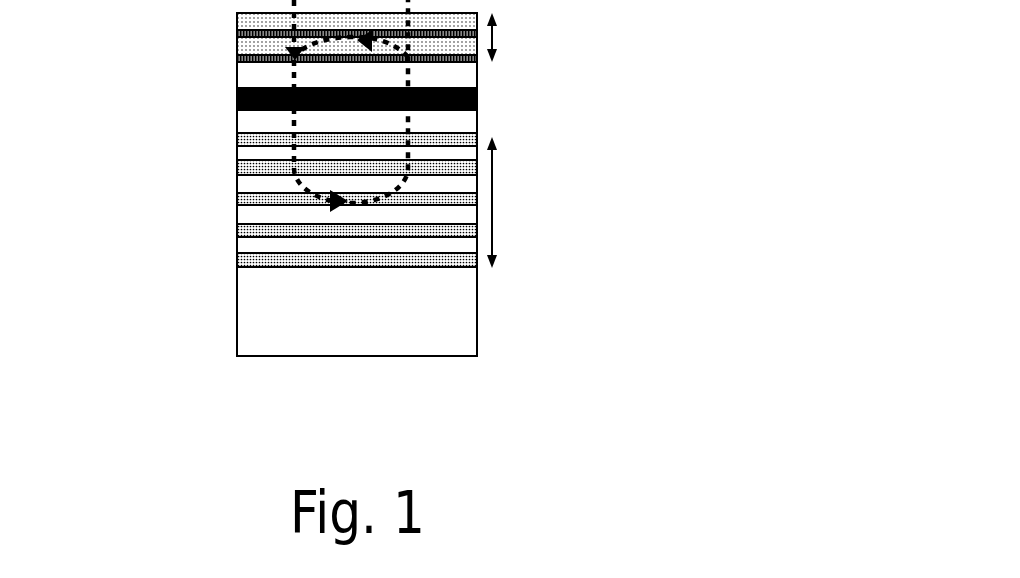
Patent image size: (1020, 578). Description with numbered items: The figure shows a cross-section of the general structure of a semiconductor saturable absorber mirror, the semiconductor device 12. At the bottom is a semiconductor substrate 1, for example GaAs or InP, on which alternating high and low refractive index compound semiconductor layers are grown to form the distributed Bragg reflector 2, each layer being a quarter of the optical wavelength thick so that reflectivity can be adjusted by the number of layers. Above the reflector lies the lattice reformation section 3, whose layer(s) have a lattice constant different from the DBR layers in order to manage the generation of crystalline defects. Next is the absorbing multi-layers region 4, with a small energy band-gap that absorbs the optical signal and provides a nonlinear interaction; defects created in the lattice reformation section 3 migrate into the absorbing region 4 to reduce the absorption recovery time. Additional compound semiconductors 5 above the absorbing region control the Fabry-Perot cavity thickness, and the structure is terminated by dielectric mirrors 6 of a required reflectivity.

The semiconductor substrate 1 is at (477, 312).
The distributed Bragg reflector 2 is at (430, 200).
The lattice reformation section 3 is at (237, 122).
The absorbing multi-layers region 4 is at (237, 100).
The additional compound semiconductors 5 is at (237, 78).
The dielectric mirrors 6 is at (237, 43).
The semiconductor device 12 is at (121, 354).